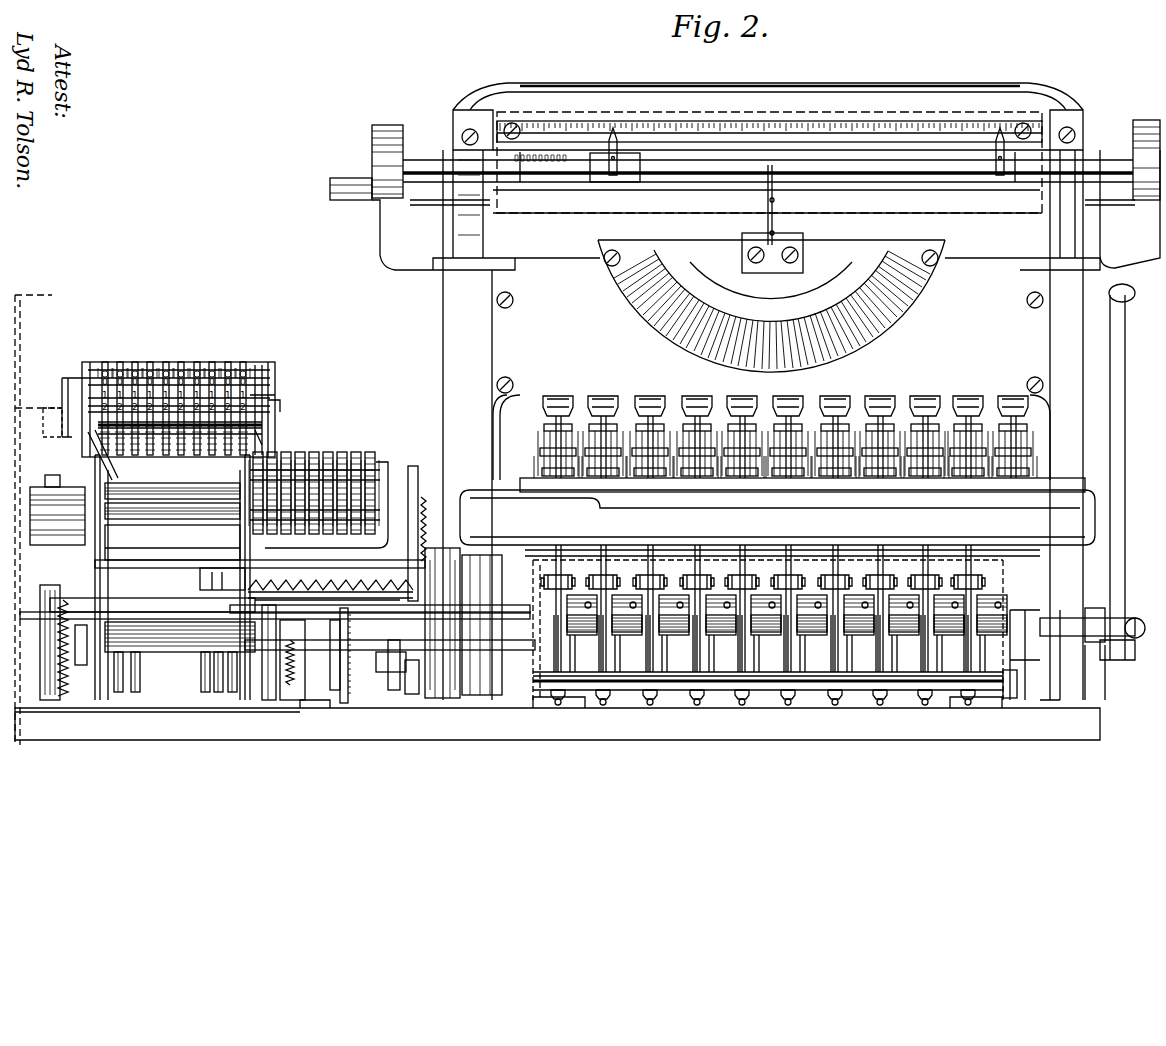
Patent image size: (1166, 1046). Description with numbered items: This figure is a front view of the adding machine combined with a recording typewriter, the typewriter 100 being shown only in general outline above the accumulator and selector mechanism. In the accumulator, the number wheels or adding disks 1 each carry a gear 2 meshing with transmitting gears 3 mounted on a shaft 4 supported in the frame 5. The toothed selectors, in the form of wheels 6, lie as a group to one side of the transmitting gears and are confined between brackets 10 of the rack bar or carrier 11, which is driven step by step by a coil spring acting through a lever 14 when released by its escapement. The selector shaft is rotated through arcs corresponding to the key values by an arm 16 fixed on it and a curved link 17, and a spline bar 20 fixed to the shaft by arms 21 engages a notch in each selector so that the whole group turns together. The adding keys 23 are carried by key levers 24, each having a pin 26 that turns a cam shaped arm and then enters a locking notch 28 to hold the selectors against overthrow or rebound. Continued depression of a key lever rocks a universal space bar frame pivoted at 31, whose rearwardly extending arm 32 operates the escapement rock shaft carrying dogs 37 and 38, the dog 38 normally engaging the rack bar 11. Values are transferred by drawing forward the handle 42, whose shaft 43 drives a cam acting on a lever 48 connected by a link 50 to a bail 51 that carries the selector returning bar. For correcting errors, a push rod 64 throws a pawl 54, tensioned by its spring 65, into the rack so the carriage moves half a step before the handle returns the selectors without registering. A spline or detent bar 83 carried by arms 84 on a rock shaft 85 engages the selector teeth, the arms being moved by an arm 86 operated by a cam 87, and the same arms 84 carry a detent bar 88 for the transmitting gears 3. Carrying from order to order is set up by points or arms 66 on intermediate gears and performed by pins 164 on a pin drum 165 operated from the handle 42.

The number wheels 1 is at (226, 366).
The gear 2 is at (245, 366).
The transmitting gears 3 is at (276, 408).
The shaft 4 is at (265, 430).
The frame 5 is at (90, 452).
The selector wheels 6 is at (312, 455).
The brackets 10 is at (238, 528).
The rack bar 11 is at (300, 575).
The lever 14 is at (425, 573).
The arm 16 is at (418, 482).
The curved link 17 is at (413, 497).
The spline bar 20 is at (130, 560).
The arms 21 is at (86, 545).
The adding keys 23 is at (545, 580).
The key levers 24 is at (560, 655).
The pin 26 is at (600, 640).
The locking notch 28 is at (735, 690).
The pivot 31 is at (1015, 690).
The rearwardly extending arm 32 is at (428, 656).
The escapement dog 37 is at (283, 592).
The escapement dog 38 is at (240, 575).
The handle 42 is at (1126, 477).
The shaft 43 is at (1092, 615).
The lever 48 is at (390, 692).
The link 50 is at (395, 662).
The bail 51 is at (172, 548).
The pawl 54 is at (380, 603).
The push rod 64 is at (272, 698).
The spring 65 is at (292, 662).
The points 66 is at (140, 375).
The spline or detent bar 83 is at (160, 495).
The arms 84 is at (108, 470).
The rock shaft 85 is at (165, 598).
The arm 86 is at (340, 692).
The cam 87 is at (345, 708).
The detent bar 88 is at (160, 388).
The typewriter 100 is at (767, 227).
The pins 164 is at (222, 695).
The pin drum 165 is at (205, 660).